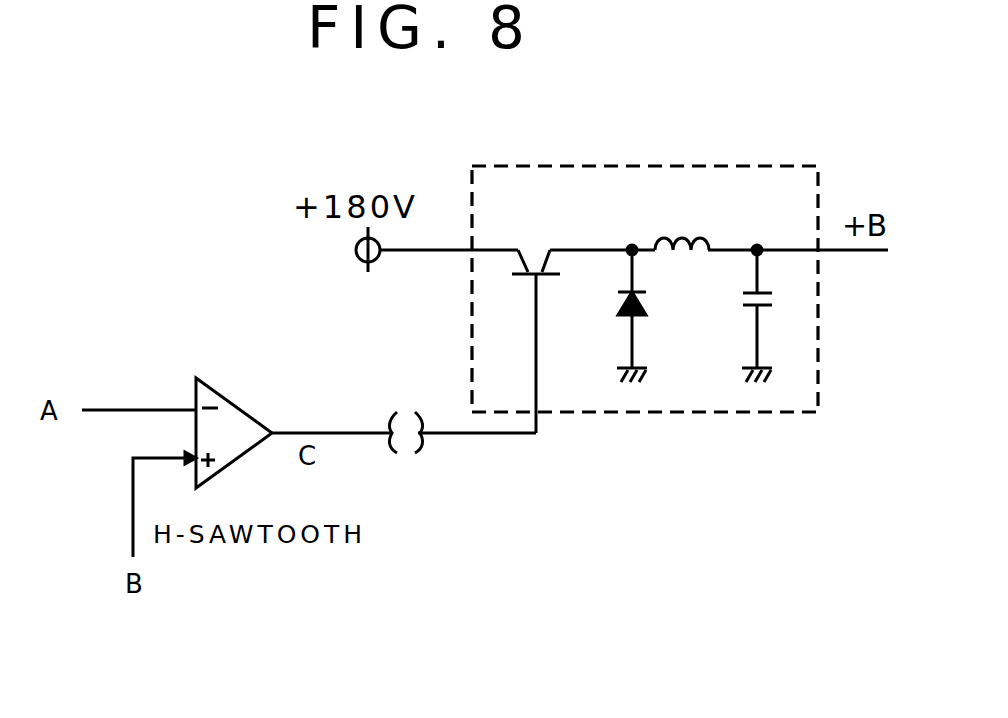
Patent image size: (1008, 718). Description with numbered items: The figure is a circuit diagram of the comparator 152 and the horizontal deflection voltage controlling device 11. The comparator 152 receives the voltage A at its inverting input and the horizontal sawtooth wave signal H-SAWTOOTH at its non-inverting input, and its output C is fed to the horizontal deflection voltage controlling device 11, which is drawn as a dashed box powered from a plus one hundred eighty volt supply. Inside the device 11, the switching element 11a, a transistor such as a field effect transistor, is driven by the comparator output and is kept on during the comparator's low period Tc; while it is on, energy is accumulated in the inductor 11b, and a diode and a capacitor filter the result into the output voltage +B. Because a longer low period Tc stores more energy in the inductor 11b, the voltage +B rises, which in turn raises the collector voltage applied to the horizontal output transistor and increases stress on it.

The horizontal deflection voltage controlling device 11 is at (630, 412).
The switching element 11a is at (540, 252).
The inductor 11b is at (693, 232).
The comparator 152 is at (242, 408).